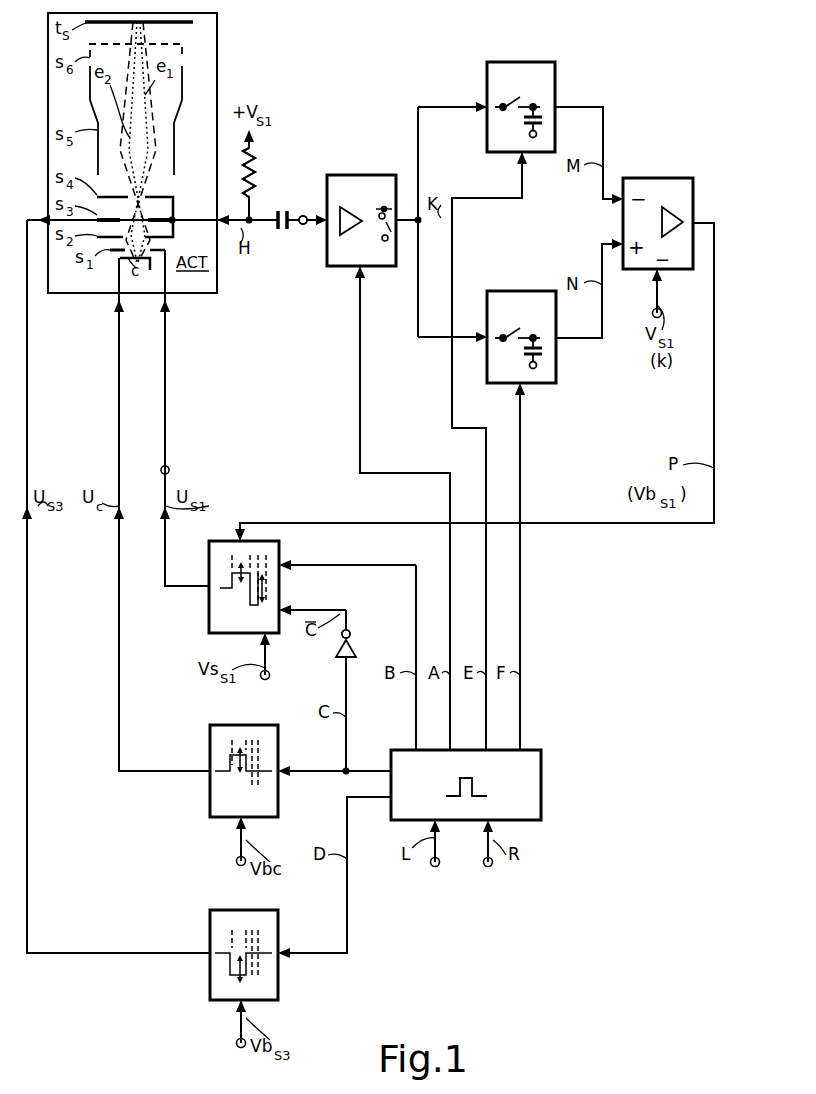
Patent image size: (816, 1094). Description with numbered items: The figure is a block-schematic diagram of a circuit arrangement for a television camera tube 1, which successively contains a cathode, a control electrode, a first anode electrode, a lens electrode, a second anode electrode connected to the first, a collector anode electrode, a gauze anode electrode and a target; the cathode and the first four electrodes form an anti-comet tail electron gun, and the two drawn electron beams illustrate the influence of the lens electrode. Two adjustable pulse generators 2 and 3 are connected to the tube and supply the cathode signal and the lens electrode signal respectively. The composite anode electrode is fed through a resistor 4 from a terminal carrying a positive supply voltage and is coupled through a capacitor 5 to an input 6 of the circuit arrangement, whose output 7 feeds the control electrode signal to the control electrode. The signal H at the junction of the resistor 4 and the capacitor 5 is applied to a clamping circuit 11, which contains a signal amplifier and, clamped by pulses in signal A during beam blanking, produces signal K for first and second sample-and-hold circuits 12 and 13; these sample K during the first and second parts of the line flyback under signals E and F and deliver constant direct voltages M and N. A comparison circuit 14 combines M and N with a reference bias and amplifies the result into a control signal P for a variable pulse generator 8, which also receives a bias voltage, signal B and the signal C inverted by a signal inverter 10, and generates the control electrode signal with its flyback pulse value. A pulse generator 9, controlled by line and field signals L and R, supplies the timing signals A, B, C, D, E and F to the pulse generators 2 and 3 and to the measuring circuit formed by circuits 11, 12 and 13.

The television camera tube 1 is at (217, 48).
The adjustable pulse generator 2 is at (210, 784).
The adjustable pulse generator 3 is at (210, 980).
The resistor 4 is at (256, 176).
The capacitor 5 is at (288, 231).
The input 6 is at (303, 214).
The output 7 is at (169, 468).
The variable pulse generator 8 is at (209, 616).
The pulse generator 9 is at (541, 790).
The signal inverter 10 is at (344, 660).
The clamping circuit 11 is at (362, 175).
The first sample-and-hold circuit 12 is at (522, 62).
The second sample-and-hold circuit 13 is at (518, 291).
The comparison circuit 14 is at (661, 178).